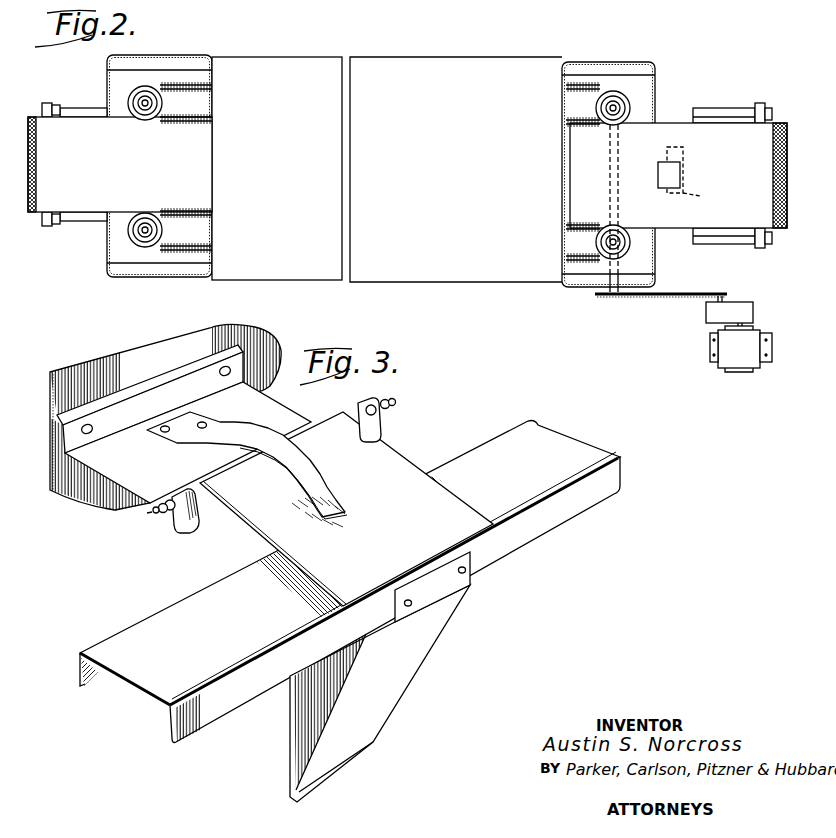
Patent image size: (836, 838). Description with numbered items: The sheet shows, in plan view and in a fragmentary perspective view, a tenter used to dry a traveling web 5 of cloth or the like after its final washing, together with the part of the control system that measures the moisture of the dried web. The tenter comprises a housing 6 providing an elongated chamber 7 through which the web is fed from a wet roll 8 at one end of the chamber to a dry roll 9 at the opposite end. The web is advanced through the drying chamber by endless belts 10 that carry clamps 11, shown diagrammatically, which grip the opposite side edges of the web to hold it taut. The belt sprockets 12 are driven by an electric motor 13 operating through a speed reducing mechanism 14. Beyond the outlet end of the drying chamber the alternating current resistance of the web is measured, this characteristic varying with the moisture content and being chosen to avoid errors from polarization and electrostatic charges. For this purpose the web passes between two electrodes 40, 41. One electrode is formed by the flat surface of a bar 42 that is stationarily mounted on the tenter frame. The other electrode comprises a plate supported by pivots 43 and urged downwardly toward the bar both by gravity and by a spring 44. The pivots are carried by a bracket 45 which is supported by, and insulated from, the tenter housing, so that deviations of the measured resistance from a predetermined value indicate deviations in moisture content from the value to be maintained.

In FIG. 2, the traveling web 5 is at (85, 198).
In FIG. 2, the housing 6 is at (292, 62).
In FIG. 3, the housing 6 is at (108, 362).
In FIG. 2, the elongated chamber 7 is at (190, 63).
In FIG. 2, the wet roll 8 is at (48, 105).
In FIG. 2, the dry roll 9 is at (778, 122).
In FIG. 2, the endless belts 10 is at (195, 117).
In FIG. 2, the clamps 11 is at (170, 203).
In FIG. 2, the belt sprockets 12 is at (630, 98).
In FIG. 2, the electric motor 13 is at (731, 358).
In FIG. 2, the speed reducing mechanism 14 is at (706, 313).
In FIG. 2, the electrode 40 is at (658, 176).
In FIG. 3, the electrode 40 is at (447, 501).
In FIG. 2, the electrode 41 is at (702, 202).
In FIG. 3, the electrode 41 is at (512, 505).
In FIG. 3, the bar 42 is at (78, 672).
In FIG. 3, the pivots 43 is at (201, 492).
In FIG. 3, the spring 44 is at (298, 470).
In FIG. 3, the bracket 45 is at (115, 467).